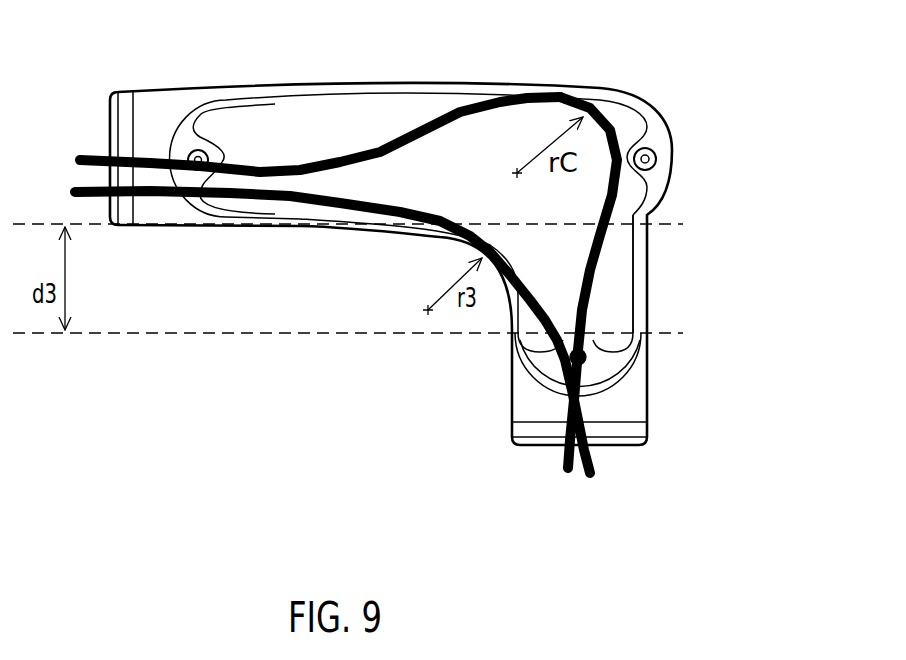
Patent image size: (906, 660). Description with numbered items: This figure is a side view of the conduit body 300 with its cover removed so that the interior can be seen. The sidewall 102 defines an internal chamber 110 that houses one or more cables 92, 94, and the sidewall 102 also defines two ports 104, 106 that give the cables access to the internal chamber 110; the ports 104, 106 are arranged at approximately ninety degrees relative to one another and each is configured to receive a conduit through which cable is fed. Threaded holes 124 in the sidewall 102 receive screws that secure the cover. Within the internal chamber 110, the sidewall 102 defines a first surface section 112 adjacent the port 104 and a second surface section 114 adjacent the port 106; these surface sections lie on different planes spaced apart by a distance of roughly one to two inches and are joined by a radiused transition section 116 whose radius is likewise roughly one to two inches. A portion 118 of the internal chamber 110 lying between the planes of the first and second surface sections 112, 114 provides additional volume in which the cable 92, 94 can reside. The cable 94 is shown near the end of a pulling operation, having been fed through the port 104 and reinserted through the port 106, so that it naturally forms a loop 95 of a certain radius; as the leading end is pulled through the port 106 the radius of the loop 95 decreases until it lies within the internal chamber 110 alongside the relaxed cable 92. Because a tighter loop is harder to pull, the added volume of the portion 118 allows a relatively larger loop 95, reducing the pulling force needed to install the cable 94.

The conduit body 300 is at (420, 258).
The sidewall 102 is at (440, 90).
The port 104 is at (110, 118).
The port 106 is at (512, 442).
The internal chamber 110 is at (333, 110).
The first surface section 112 is at (347, 225).
The second surface section 114 is at (600, 330).
The radiused transition section 116 is at (460, 240).
The portion of the internal chamber 118 is at (618, 277).
The threaded holes 124 is at (193, 150).
The cable 92 is at (277, 208).
The cable 94 is at (366, 248).
The loop 95 is at (587, 115).